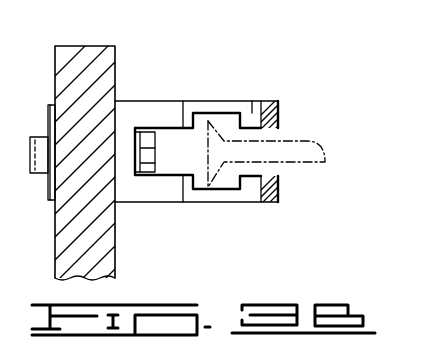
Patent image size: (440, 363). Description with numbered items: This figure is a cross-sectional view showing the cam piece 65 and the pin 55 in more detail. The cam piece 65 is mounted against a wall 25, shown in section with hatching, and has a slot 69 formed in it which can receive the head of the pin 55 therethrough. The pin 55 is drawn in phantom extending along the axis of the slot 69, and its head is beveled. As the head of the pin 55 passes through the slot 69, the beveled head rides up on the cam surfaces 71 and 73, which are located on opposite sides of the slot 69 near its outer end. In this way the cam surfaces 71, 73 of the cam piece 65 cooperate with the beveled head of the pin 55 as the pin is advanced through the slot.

The wall 25 is at (84, 57).
The pin 55 is at (298, 153).
The cam piece 65 is at (152, 190).
The slot 69 is at (177, 152).
The cam surface 71 is at (253, 118).
The cam surface 73 is at (258, 182).